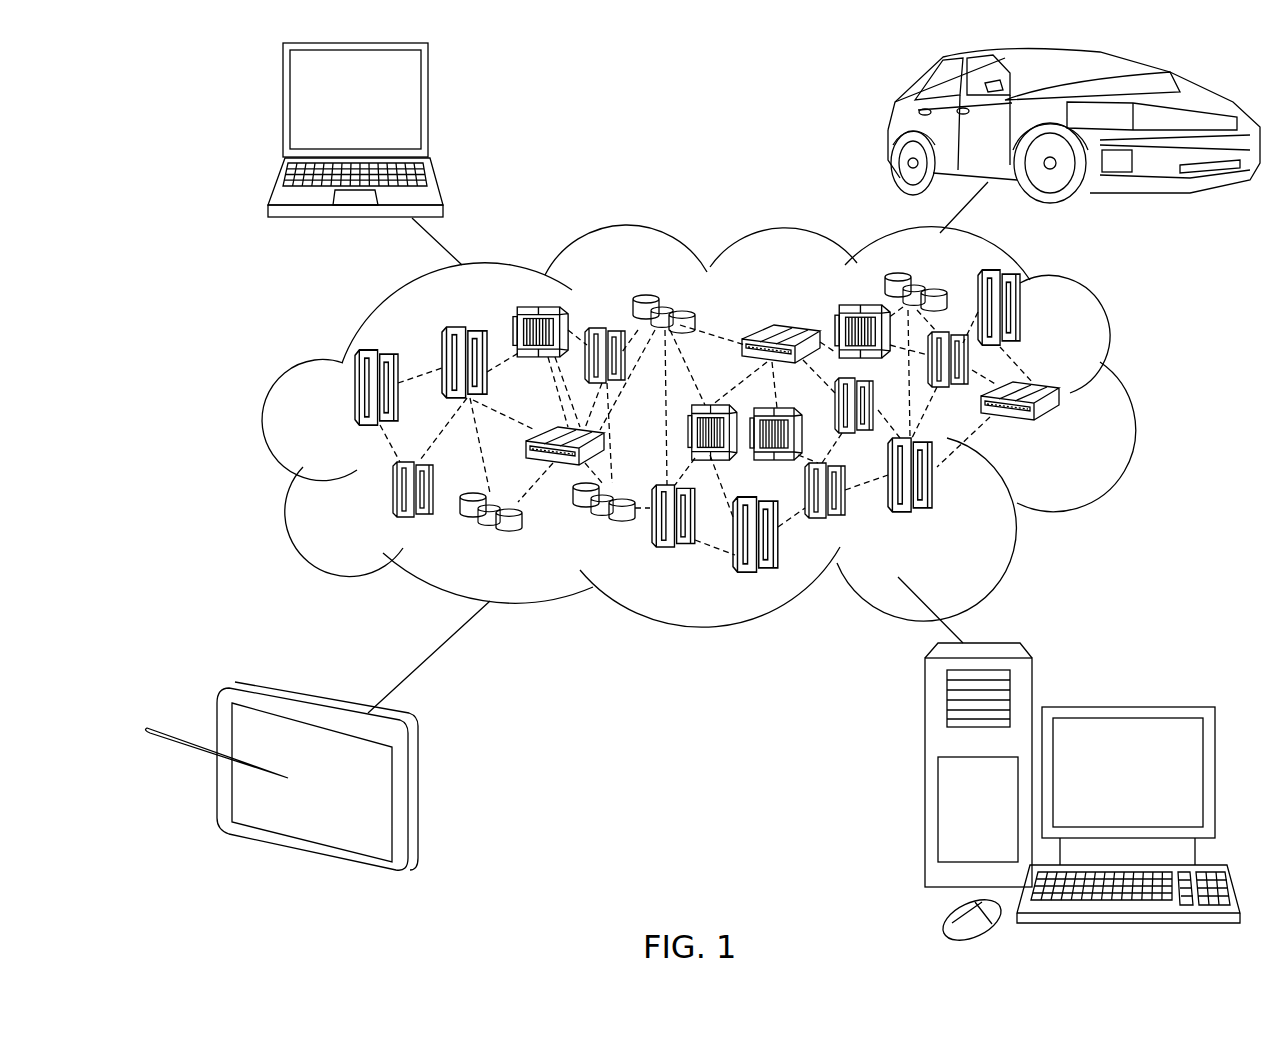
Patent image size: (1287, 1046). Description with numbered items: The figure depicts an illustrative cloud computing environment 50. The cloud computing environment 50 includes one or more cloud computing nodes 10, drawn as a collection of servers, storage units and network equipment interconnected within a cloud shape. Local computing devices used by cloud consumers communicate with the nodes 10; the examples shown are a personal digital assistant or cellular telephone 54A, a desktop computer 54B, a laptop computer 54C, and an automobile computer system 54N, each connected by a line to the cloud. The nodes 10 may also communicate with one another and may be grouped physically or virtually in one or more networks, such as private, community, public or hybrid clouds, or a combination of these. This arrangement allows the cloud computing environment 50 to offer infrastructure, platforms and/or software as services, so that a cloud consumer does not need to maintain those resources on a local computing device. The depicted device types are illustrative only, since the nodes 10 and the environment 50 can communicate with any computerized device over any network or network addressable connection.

The cloud computing node 10 is at (1074, 432).
The cloud computing environment 50 is at (1125, 398).
The personal digital assistant or cellular telephone 54A is at (418, 803).
The desktop computer 54B is at (1124, 706).
The laptop computer 54C is at (428, 108).
The automobile computer system 54N is at (892, 127).